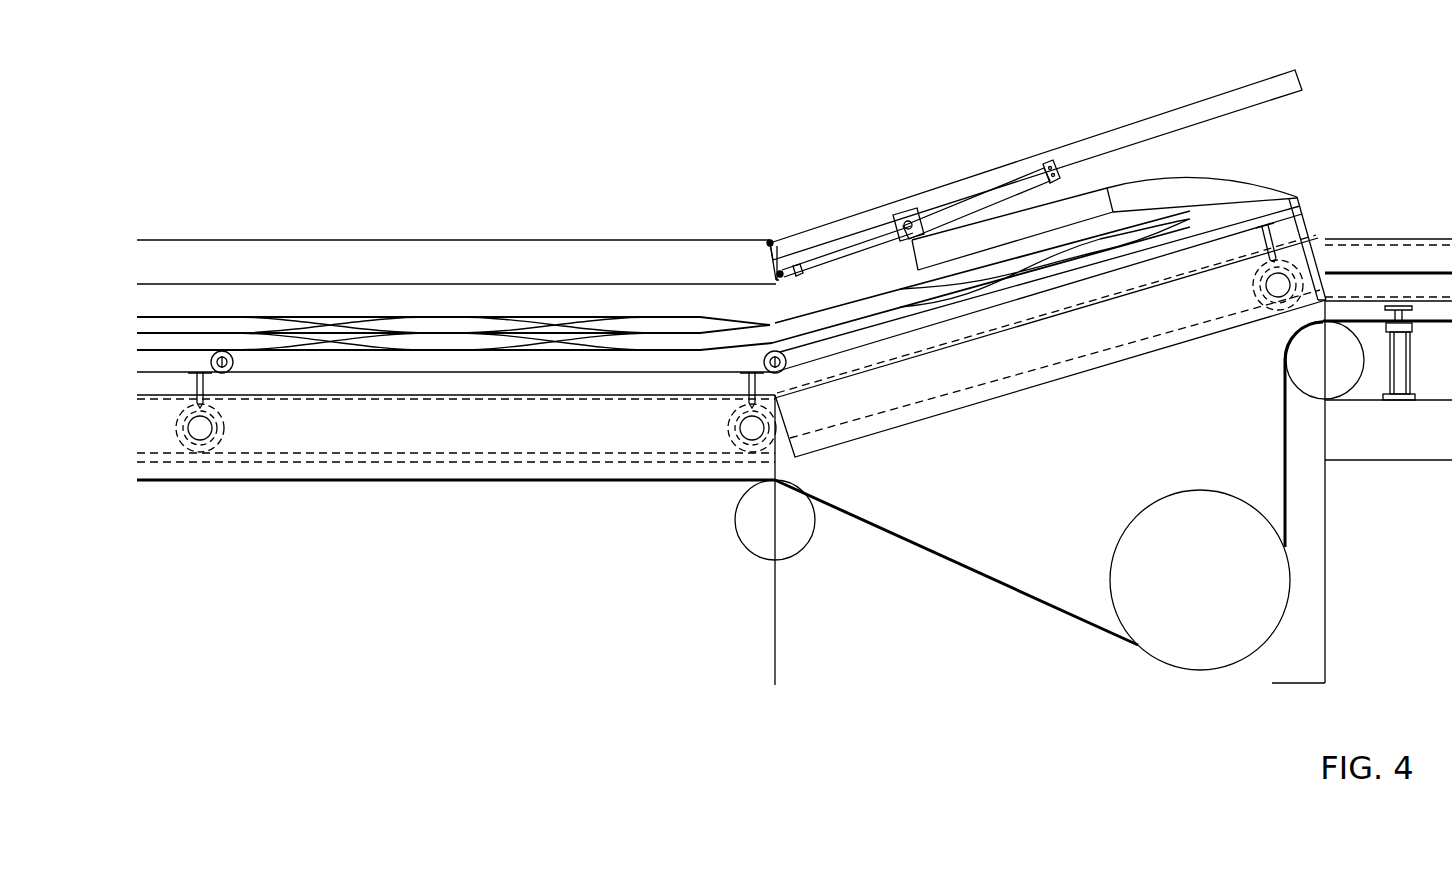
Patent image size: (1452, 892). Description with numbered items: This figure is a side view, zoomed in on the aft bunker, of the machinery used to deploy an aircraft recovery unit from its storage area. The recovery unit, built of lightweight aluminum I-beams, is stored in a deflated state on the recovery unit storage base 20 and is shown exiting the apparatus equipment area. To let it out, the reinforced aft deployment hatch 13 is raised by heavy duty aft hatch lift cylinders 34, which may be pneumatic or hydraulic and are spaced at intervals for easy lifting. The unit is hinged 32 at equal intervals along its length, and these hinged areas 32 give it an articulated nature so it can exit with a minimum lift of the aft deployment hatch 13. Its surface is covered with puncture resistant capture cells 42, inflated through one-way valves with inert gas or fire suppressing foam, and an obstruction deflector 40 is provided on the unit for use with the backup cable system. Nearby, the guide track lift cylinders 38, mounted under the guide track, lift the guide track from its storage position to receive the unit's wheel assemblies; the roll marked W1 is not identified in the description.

The aft deployment hatch 13 is at (1300, 76).
The recovery unit storage base 20 is at (258, 463).
The hinged areas 32 is at (222, 351).
The aft hatch lift cylinders 34 is at (980, 192).
The guide track lift cylinders 38 is at (1395, 402).
The obstruction deflector 40 is at (1313, 240).
The capture cells 42 is at (857, 320).
The web roll W1 is at (1200, 580).